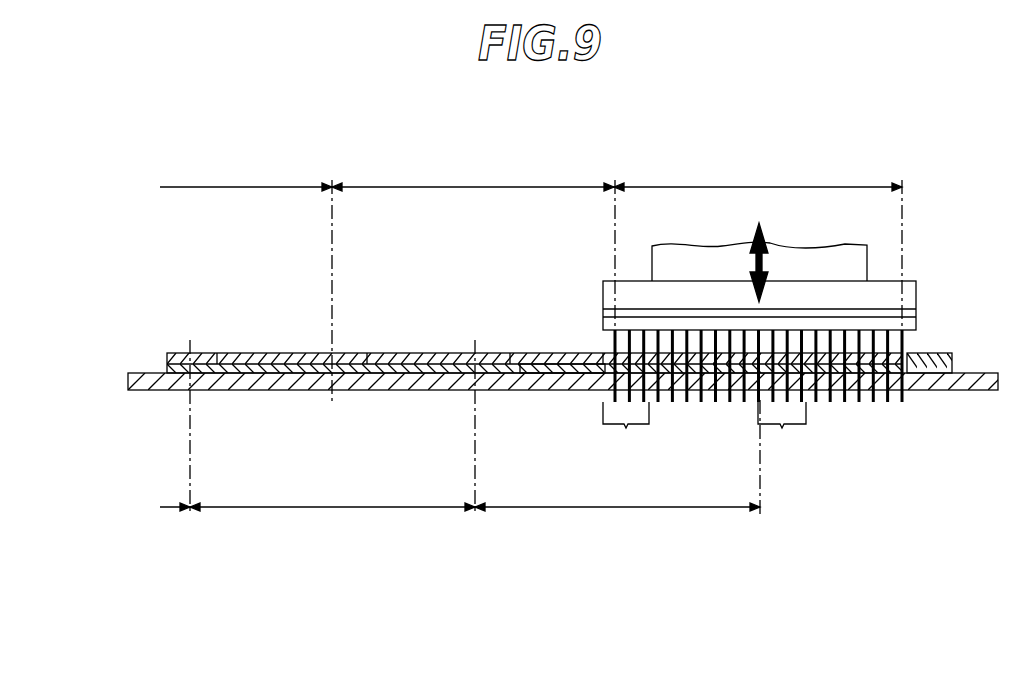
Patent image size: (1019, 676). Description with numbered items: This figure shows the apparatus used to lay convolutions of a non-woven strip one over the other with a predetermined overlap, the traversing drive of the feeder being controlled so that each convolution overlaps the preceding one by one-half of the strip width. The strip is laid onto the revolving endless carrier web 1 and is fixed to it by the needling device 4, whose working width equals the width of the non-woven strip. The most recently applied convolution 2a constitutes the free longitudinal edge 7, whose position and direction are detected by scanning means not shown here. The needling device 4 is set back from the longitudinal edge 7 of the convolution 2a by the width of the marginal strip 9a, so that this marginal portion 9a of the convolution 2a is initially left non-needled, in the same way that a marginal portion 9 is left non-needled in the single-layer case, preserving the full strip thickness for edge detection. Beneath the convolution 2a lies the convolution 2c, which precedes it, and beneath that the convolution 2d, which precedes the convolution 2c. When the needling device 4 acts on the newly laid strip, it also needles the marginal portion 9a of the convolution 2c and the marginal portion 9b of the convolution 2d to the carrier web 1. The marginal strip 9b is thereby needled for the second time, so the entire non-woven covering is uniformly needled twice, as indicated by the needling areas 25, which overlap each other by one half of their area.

The carrier web 1 is at (958, 380).
The free longitudinal edge 7 is at (953, 363).
The marginal portion 9 is at (920, 360).
The marginal portion of convolution 2c 9a is at (783, 399).
The marginal portion of convolution 2d 9b is at (627, 399).
The needling device 4 is at (908, 293).
The convolution of the non-woven strip 2a is at (853, 363).
The convolution preceding convolution 2a 2c is at (694, 363).
The convolution preceding convolution 2c 2d is at (543, 368).
The needling areas 25 is at (207, 186).